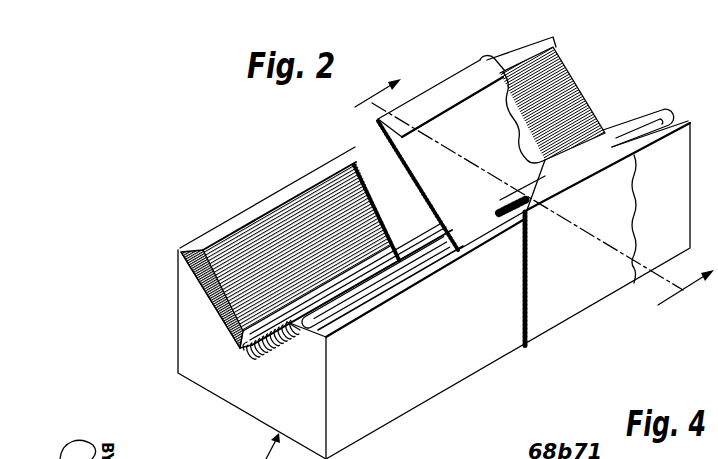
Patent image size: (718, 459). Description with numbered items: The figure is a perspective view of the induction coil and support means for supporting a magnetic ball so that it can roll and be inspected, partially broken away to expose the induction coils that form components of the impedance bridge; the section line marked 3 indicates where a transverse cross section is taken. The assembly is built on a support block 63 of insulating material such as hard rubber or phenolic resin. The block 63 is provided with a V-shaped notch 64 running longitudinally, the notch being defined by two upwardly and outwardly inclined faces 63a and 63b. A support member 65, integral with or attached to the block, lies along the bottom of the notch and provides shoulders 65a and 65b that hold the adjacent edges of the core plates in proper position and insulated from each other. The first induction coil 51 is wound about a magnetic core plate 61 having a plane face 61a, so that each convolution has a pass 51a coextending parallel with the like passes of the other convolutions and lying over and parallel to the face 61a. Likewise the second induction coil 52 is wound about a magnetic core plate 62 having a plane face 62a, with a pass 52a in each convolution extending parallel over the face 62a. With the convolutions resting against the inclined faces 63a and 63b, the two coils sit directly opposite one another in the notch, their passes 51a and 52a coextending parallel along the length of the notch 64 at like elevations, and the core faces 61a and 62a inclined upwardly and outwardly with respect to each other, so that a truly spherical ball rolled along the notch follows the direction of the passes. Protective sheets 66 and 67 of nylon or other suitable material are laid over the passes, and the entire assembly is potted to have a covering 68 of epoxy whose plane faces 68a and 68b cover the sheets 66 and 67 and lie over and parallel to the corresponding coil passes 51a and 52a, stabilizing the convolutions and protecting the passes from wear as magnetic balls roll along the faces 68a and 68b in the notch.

The section line 3- 3 is at (527, 197).
The first induction coil 51 is at (408, 279).
The pass 51a is at (356, 289).
The second induction coil 52 is at (200, 231).
The pass 52a is at (267, 222).
The magnetic core plate 61 is at (655, 125).
The plane face 61a is at (300, 341).
The magnetic core plate 62 is at (192, 258).
The plane face 62a is at (263, 222).
The support block 63 is at (445, 372).
The inclined face 63a is at (340, 322).
The inclined face 63b is at (207, 287).
The V-shaped notch 64 is at (188, 297).
The support member 65 is at (246, 358).
The shoulder 65a is at (253, 358).
The shoulder 65b is at (248, 352).
The protective sheet 66 is at (437, 237).
The protective sheet 67 is at (372, 170).
The covering 68 is at (521, 346).
The plane face 68a is at (543, 174).
The plane face 68b is at (472, 120).